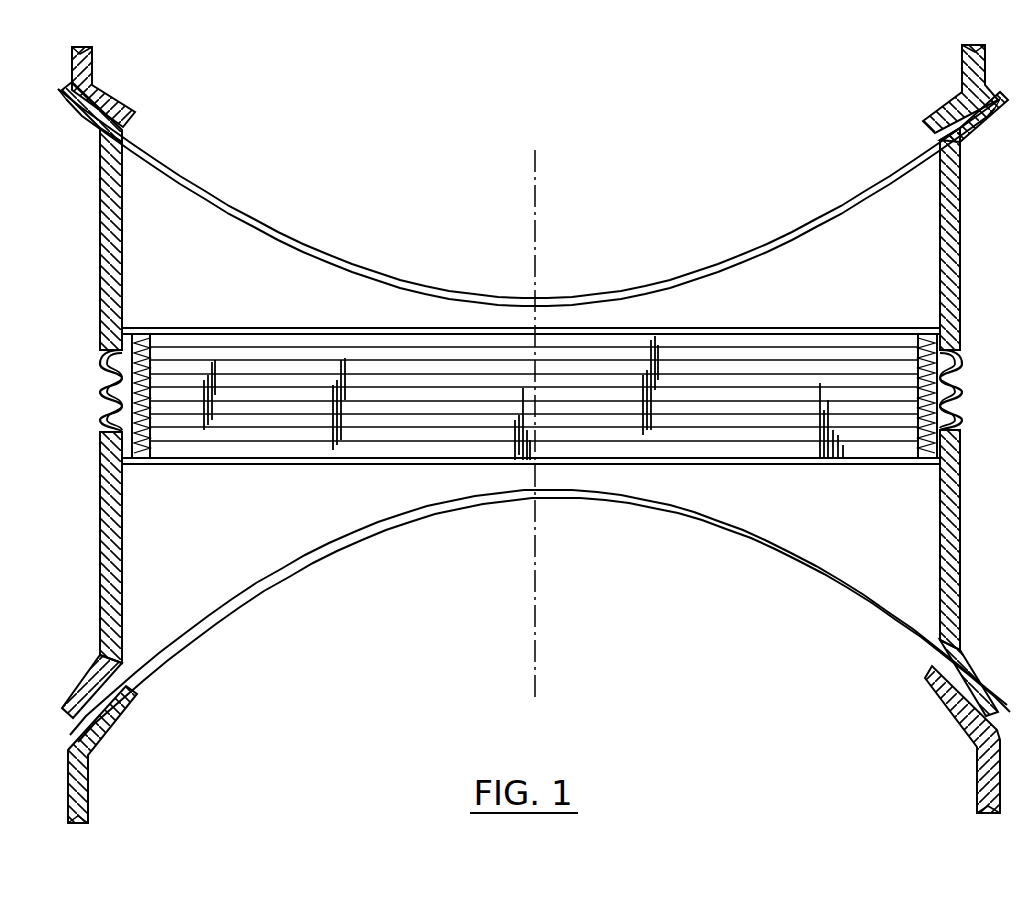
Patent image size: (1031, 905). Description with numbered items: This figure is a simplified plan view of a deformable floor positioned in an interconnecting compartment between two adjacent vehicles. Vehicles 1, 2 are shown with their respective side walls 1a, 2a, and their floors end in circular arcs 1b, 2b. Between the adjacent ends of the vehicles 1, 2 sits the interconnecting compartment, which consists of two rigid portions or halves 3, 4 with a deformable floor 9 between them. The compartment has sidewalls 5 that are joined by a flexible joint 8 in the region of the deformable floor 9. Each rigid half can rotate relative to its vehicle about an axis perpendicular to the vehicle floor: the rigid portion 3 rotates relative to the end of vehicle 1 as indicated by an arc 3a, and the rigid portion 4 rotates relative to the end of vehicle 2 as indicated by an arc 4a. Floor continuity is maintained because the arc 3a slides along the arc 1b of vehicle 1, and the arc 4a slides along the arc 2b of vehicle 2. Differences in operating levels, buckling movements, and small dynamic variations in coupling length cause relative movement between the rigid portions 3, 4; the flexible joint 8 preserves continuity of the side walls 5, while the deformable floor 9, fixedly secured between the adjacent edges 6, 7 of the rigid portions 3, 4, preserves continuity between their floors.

The vehicle 1 is at (529, 175).
The side wall 1a is at (94, 60).
The circular arc 1b is at (412, 275).
The vehicle 2 is at (539, 656).
The side wall 2a is at (983, 772).
The circular arc 2b is at (256, 573).
The rigid portion 3 is at (192, 280).
The arc 3a is at (830, 226).
The rigid portion 4 is at (185, 548).
The arc 4a is at (817, 557).
The sidewalls 5 is at (110, 298).
The adjacent edge 6 is at (738, 465).
The adjacent edge 7 is at (804, 326).
The flexible joint 8 is at (103, 410).
The deformable floor 9 is at (370, 412).